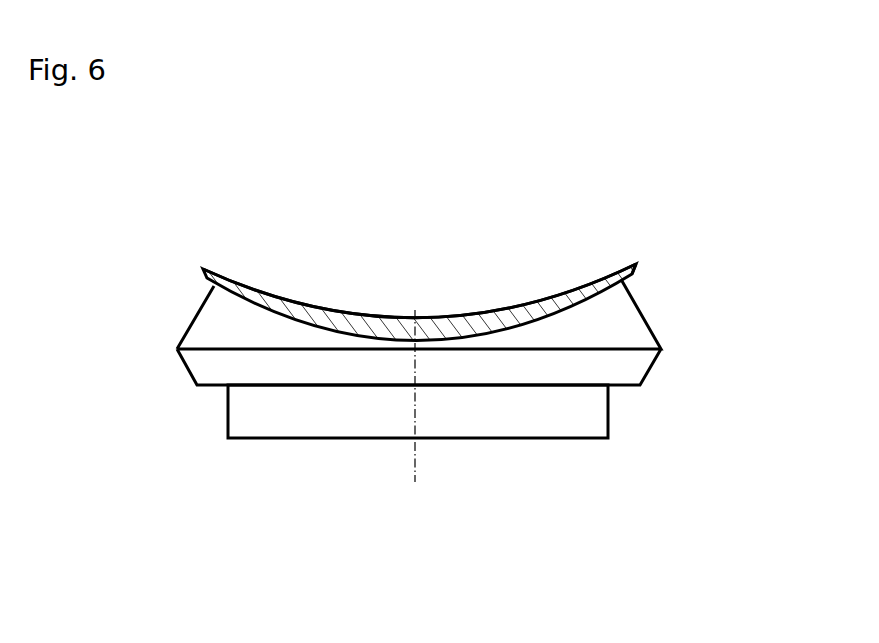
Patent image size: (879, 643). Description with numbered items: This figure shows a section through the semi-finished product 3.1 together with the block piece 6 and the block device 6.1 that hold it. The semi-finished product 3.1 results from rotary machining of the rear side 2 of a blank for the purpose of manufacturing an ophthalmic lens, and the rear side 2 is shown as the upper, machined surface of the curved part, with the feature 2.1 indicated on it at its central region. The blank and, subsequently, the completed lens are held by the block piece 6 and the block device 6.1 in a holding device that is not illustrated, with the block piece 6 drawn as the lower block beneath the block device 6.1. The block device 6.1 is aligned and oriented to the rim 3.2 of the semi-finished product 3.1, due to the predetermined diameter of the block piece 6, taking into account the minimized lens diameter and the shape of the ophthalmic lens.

The rear side 2 is at (456, 260).
The top surface of optical element 2.1 is at (428, 315).
The semi-finished product 3.1 is at (330, 320).
The rim 3.2 is at (640, 254).
The block piece 6 is at (272, 422).
The block device 6.1 is at (633, 323).